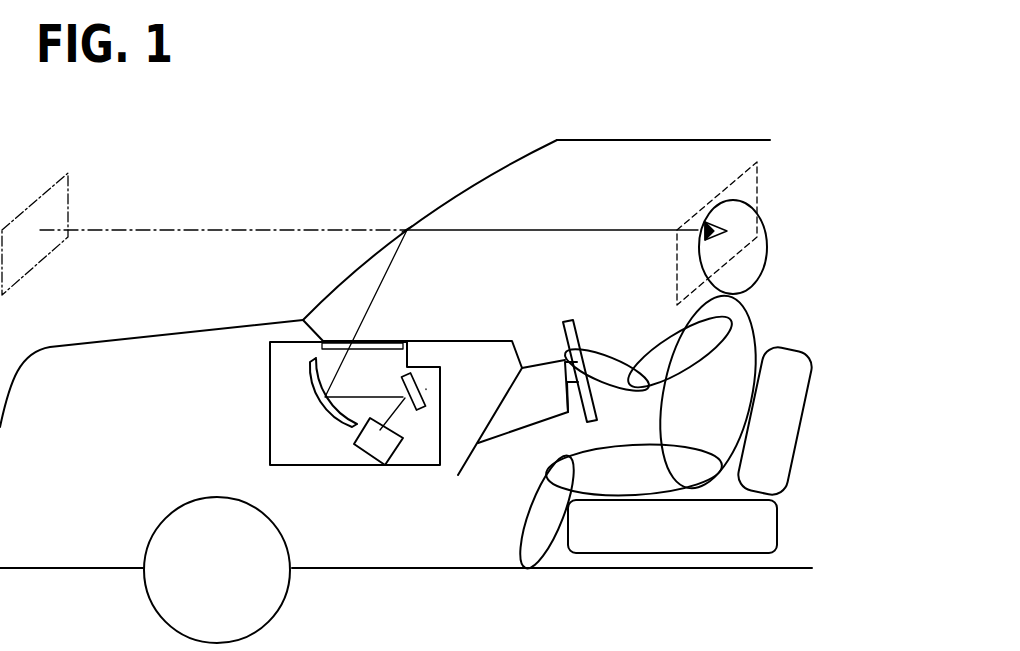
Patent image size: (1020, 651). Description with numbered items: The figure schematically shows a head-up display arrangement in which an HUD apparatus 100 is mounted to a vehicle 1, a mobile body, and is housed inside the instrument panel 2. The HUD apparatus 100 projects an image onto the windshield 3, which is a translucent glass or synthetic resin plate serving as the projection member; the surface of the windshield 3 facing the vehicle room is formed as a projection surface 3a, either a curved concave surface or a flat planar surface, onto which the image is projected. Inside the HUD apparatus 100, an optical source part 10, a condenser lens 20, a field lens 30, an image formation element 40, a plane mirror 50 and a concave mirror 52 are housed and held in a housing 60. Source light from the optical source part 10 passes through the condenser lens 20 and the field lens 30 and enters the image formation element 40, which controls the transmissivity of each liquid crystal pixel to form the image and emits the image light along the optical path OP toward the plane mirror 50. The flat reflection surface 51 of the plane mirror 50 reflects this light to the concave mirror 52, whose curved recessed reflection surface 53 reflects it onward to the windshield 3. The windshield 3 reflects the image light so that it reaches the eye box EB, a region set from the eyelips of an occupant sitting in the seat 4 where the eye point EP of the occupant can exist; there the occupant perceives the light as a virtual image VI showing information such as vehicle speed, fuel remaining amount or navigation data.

The vehicle 1 is at (737, 140).
The instrument panel 2 is at (477, 340).
The windshield 3 is at (473, 186).
The projection surface 3a is at (407, 230).
The seat 4 is at (813, 373).
The optical source part 10 is at (390, 478).
The condenser lens 20 is at (390, 478).
The field lens 30 is at (390, 478).
The image formation element 40 is at (365, 450).
The plane mirror 50 is at (426, 389).
The reflection surface 51 is at (402, 385).
The concave mirror 52 is at (326, 368).
The reflection surface 53 is at (322, 366).
The housing 60 is at (270, 452).
The HUD apparatus 100 is at (308, 384).
The virtual image VI is at (68, 198).
The optical path OP is at (377, 286).
The eye point EP is at (707, 228).
The eye box EB is at (762, 188).